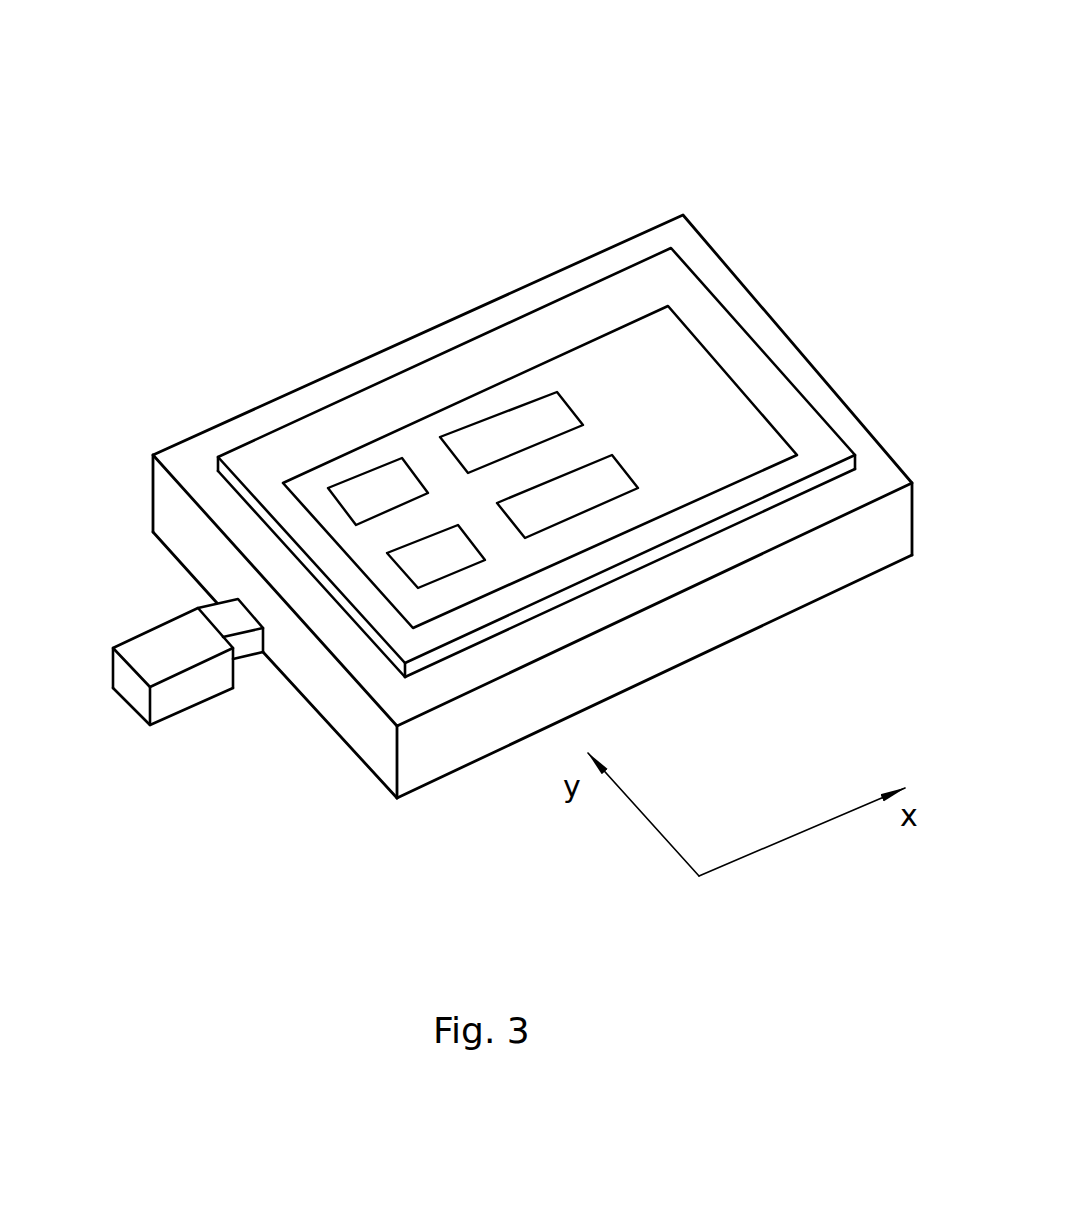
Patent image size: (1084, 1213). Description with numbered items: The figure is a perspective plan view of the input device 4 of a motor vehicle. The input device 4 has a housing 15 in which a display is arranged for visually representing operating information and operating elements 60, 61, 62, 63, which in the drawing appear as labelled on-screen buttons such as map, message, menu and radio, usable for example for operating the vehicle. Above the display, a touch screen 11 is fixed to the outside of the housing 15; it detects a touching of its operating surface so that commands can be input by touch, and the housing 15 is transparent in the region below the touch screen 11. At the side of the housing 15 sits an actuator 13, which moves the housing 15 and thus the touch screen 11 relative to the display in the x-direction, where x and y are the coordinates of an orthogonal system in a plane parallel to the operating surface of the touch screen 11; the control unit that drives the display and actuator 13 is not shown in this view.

The input device 4 is at (738, 180).
The touch screen 11 is at (452, 378).
The actuator 13 is at (132, 648).
The housing 15 is at (731, 292).
The operating element 60 is at (340, 493).
The operating element 61 is at (552, 397).
The operating element 62 is at (624, 483).
The operating element 63 is at (420, 580).